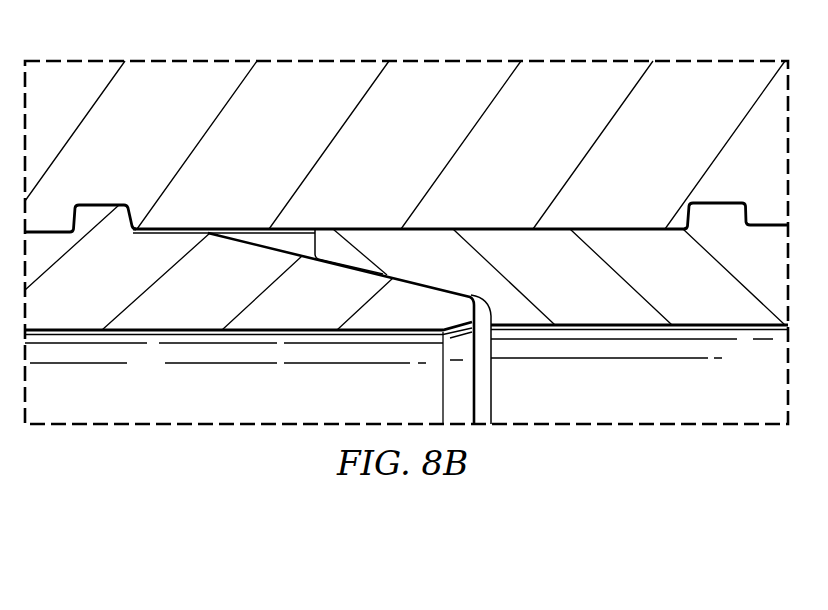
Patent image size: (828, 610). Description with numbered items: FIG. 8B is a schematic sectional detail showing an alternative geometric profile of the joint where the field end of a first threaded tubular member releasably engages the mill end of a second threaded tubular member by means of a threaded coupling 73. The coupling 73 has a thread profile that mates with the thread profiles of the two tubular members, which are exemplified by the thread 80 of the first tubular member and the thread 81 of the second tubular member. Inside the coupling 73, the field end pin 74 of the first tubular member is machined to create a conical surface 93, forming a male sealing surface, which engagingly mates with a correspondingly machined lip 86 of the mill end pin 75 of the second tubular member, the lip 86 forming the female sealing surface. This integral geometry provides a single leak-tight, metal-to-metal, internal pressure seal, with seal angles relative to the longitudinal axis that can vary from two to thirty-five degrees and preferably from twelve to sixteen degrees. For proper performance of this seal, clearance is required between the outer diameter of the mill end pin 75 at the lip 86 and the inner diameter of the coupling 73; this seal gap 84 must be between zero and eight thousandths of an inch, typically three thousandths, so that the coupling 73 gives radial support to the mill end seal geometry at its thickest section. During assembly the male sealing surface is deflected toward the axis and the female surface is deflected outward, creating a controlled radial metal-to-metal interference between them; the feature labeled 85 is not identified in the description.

The threaded coupling 73 is at (292, 78).
The field end pin 74 is at (153, 315).
The mill end pin 75 is at (737, 310).
The thread 80 is at (97, 213).
The thread 81 is at (726, 211).
The seal gap 84 is at (393, 227).
The tapered lip 85 is at (420, 287).
The lip 86 is at (433, 250).
The conical surface 93 is at (308, 316).